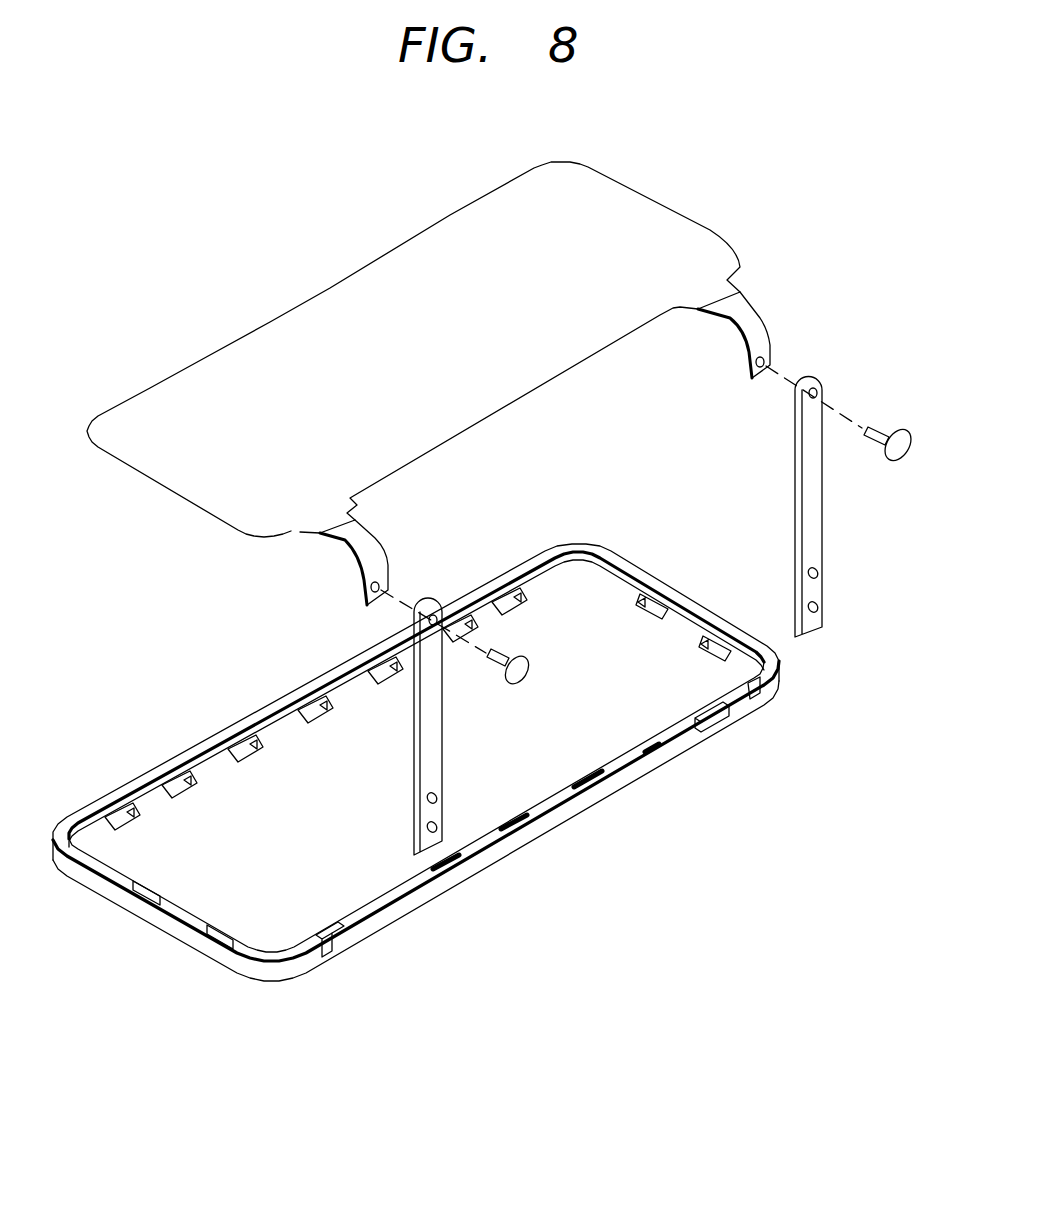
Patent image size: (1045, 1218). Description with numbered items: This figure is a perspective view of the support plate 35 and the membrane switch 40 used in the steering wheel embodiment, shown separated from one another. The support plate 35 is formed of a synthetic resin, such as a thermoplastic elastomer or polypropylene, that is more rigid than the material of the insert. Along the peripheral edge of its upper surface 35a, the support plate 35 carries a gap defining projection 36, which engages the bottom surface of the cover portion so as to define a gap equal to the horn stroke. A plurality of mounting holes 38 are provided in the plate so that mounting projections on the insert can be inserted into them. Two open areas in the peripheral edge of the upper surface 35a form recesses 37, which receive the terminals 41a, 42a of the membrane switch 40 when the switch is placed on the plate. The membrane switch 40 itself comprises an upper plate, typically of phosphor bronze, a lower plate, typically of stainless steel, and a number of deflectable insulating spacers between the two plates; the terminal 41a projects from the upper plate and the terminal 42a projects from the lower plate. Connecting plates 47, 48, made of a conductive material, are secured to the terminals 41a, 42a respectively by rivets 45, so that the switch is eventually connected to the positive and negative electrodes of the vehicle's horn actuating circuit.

The support plate 35 is at (512, 881).
The upper surface 35a is at (260, 923).
The gap defining projection 36 is at (167, 915).
The recesses 37 is at (733, 703).
The mounting holes 38 is at (655, 590).
The membrane switch 40 is at (437, 195).
The terminal 41a is at (370, 547).
The terminal 42a is at (748, 318).
The rivets 45 is at (897, 460).
The connecting plate 47 is at (430, 743).
The connecting plate 48 is at (817, 553).